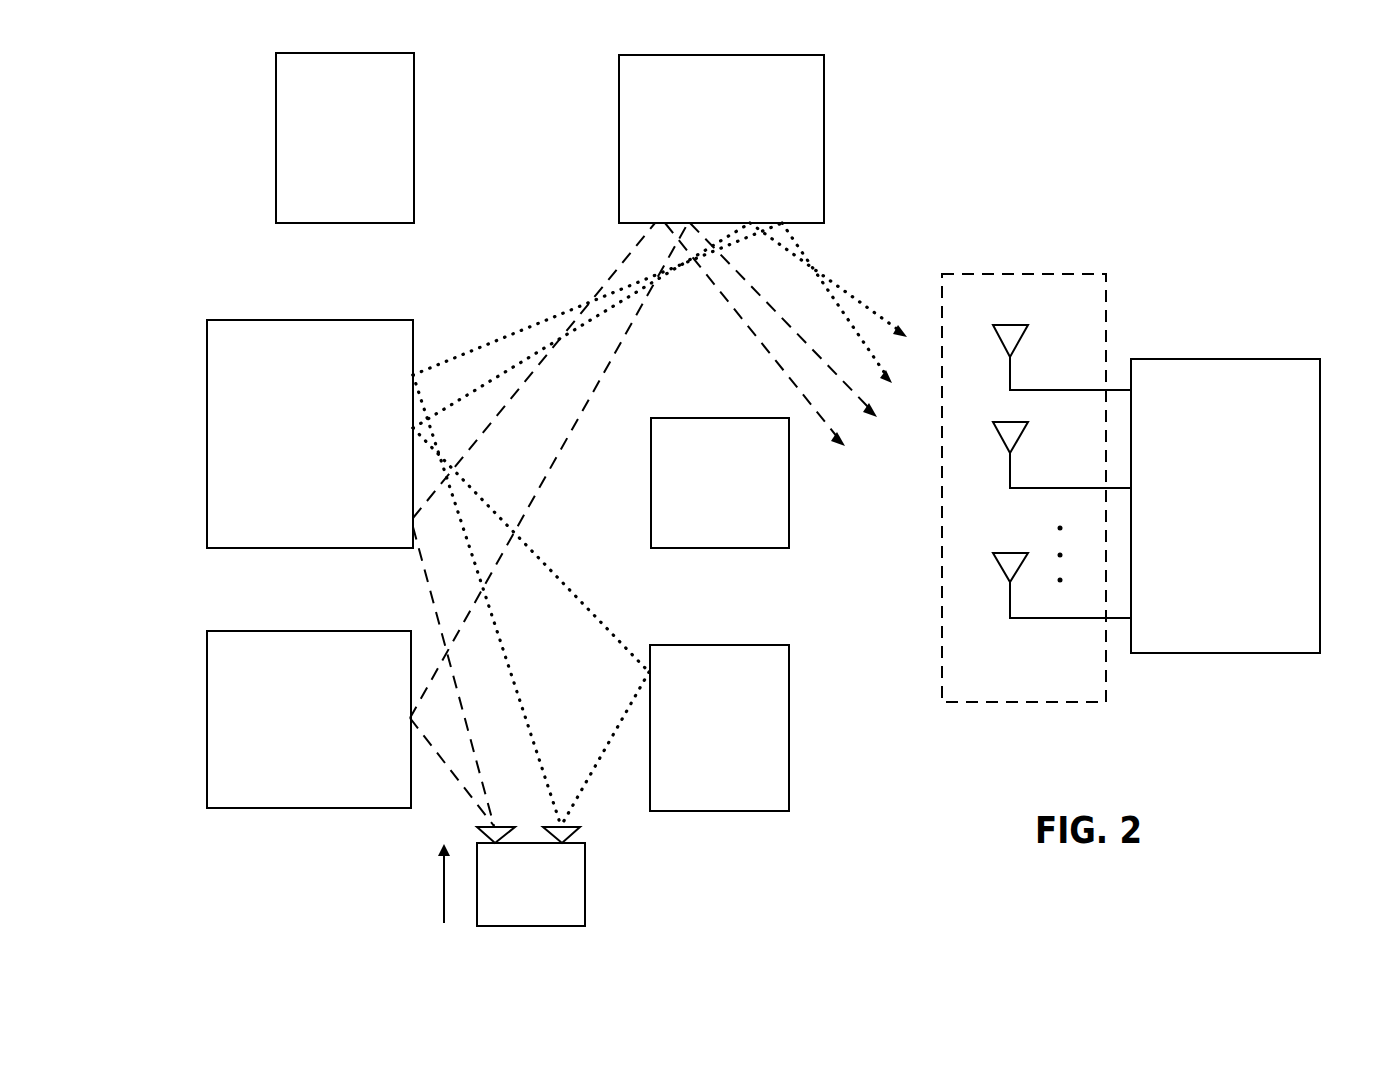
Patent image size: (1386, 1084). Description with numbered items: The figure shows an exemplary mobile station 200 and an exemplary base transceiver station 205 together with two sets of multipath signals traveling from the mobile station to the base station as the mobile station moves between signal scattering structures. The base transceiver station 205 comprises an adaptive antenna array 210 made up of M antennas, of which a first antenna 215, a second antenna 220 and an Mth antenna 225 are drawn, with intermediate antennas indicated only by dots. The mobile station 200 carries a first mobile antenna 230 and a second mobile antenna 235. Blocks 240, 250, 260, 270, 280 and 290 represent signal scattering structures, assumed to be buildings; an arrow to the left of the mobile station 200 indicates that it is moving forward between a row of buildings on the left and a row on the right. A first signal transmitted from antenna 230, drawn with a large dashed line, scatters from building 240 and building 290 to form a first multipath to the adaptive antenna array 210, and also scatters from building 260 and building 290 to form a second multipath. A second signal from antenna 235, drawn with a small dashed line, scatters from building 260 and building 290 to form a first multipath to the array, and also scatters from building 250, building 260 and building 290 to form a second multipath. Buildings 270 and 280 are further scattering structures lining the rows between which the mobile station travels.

The mobile station 200 is at (586, 883).
The base transceiver station 205 is at (1228, 358).
The adaptive antenna array 210 is at (1030, 273).
The first antenna 215 is at (1068, 389).
The second antenna 220 is at (1068, 487).
The Mth antenna 225 is at (1068, 619).
The first mobile antenna 230 is at (480, 826).
The second mobile antenna 235 is at (576, 826).
The signal scattering structure 240 is at (332, 735).
The signal scattering structure 250 is at (742, 739).
The signal scattering structure 260 is at (332, 447).
The signal scattering structure 270 is at (743, 495).
The signal scattering structure 280 is at (368, 151).
The signal scattering structure 290 is at (743, 151).